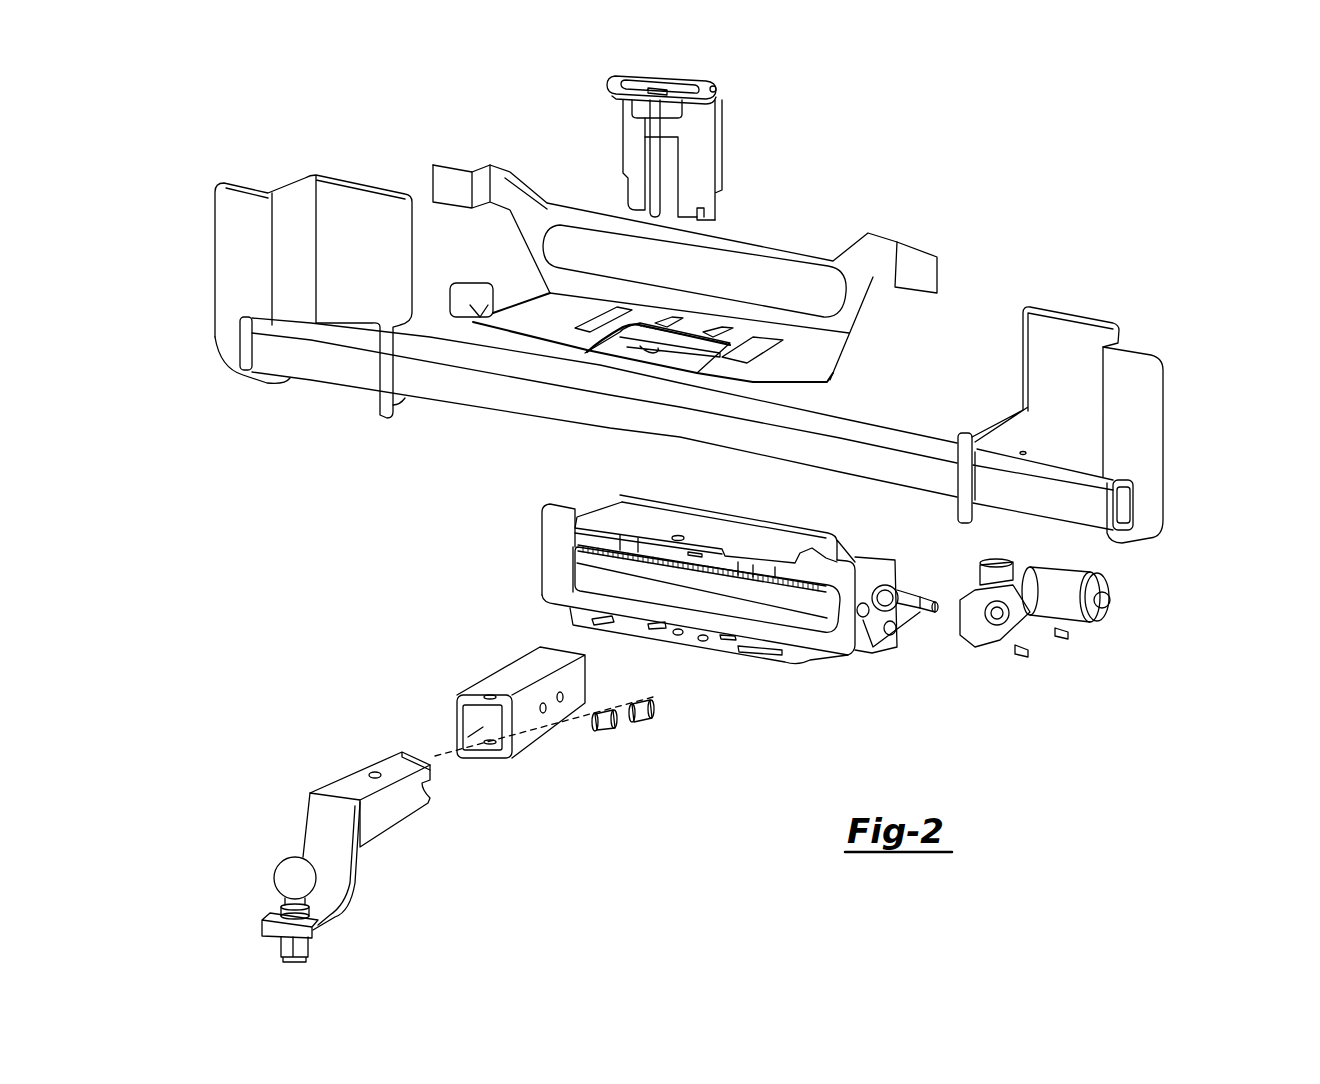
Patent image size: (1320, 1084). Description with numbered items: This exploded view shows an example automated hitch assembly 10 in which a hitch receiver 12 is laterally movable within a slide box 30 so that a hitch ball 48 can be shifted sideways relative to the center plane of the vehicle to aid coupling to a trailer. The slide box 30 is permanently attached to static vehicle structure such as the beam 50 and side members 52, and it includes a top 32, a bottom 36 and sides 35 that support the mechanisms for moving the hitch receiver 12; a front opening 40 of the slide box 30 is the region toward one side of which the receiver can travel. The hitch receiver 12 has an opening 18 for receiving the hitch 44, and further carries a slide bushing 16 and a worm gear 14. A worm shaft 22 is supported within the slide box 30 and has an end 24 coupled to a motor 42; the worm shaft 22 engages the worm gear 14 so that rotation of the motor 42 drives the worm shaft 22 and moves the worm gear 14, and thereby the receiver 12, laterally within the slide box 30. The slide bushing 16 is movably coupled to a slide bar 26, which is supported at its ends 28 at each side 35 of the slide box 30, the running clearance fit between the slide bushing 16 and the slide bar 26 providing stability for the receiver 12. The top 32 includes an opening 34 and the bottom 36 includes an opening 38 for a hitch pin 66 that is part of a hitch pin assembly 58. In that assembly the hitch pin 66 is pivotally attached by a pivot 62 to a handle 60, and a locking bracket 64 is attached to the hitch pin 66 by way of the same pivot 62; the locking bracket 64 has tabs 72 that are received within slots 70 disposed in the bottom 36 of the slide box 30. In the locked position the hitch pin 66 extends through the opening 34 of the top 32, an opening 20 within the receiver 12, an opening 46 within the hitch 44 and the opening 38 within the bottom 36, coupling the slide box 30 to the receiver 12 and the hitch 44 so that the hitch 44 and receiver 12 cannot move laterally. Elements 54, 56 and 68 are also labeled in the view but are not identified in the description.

The automated hitch assembly 10 is at (380, 606).
The hitch receiver 12 is at (535, 744).
The worm gear 14 is at (641, 723).
The slide bushing 16 is at (600, 730).
The opening 18 is at (488, 750).
The opening 20 is at (486, 692).
The worm shaft 22 is at (590, 545).
The end 24 is at (908, 585).
The slide bar 26 is at (617, 560).
The ends 28 is at (899, 603).
The slide box 30 is at (650, 553).
The top 32 is at (762, 545).
The opening 34 is at (677, 530).
The sides 35 is at (866, 582).
The bottom 36 is at (709, 680).
The opening 38 is at (677, 640).
The front opening 40 is at (568, 560).
The motor 42 is at (1075, 607).
The hitch 44 is at (317, 852).
The opening 46 is at (368, 773).
The hitch ball 48 is at (290, 878).
The beam 50 is at (863, 460).
The side members 52 is at (227, 212).
The center bracket 54 is at (845, 260).
The base plate 56 is at (683, 338).
The hitch pin assembly 58 is at (710, 134).
The handle 60 is at (620, 73).
The pivot 62 is at (720, 82).
The locking bracket 64 is at (708, 152).
The hitch pin 66 is at (655, 147).
The latch body 68 is at (683, 176).
The slots 70 is at (653, 627).
The tabs 72 is at (637, 205).